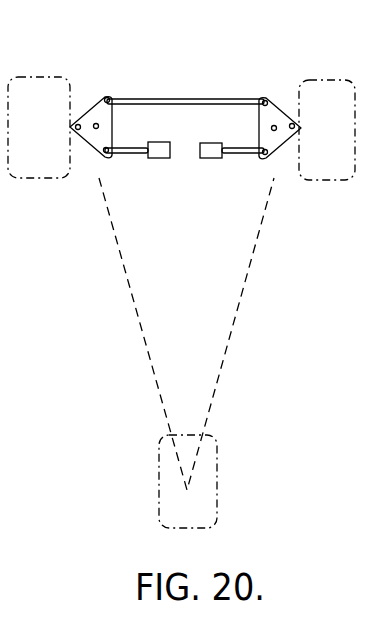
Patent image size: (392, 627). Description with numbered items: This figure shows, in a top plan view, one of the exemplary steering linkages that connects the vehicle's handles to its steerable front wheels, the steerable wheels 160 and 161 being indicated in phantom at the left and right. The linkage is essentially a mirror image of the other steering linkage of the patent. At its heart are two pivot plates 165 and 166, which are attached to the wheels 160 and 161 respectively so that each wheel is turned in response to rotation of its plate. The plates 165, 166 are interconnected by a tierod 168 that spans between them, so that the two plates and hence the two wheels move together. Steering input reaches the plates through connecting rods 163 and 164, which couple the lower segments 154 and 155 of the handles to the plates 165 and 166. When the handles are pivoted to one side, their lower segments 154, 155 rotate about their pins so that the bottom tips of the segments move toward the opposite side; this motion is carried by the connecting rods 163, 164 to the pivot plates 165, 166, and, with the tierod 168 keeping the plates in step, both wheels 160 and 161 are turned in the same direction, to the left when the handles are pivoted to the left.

The lower segment 154 is at (163, 158).
The lower segment 155 is at (207, 143).
The steerable wheel 160 is at (40, 77).
The steerable wheel 161 is at (331, 79).
The connecting rod 163 is at (131, 158).
The connecting rod 164 is at (212, 158).
The pivot plate 165 is at (100, 100).
The pivot plate 166 is at (277, 99).
The tierod 168 is at (180, 98).